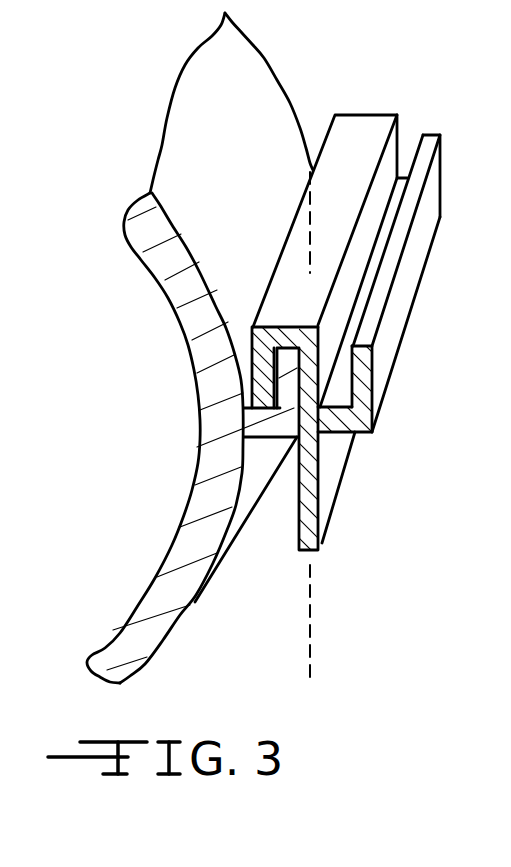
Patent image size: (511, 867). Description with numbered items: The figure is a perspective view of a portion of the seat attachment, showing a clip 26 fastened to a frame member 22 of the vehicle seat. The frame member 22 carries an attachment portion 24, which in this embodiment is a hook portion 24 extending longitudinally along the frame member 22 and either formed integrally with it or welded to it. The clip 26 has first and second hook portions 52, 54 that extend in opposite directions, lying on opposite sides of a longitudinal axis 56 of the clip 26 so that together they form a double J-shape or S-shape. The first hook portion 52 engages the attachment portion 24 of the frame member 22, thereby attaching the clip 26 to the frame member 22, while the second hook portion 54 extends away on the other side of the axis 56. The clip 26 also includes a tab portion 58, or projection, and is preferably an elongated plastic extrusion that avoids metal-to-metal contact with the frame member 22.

The frame member 22 is at (187, 287).
The attachment portion 24 is at (291, 398).
The clip 26 is at (380, 390).
The first hook portion 52 is at (262, 343).
The second hook portion 54 is at (378, 434).
The longitudinal axis 56 is at (312, 633).
The tab portion 58 is at (312, 513).